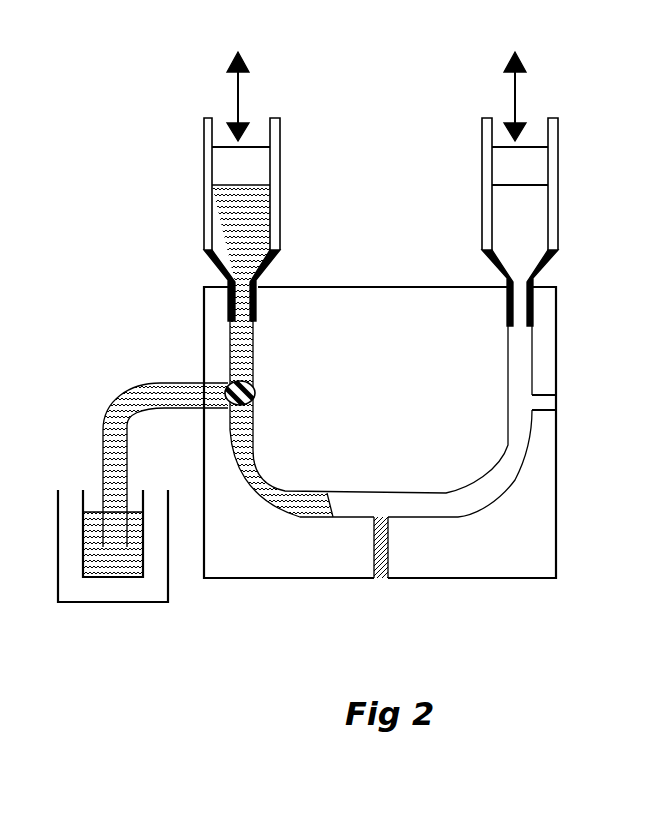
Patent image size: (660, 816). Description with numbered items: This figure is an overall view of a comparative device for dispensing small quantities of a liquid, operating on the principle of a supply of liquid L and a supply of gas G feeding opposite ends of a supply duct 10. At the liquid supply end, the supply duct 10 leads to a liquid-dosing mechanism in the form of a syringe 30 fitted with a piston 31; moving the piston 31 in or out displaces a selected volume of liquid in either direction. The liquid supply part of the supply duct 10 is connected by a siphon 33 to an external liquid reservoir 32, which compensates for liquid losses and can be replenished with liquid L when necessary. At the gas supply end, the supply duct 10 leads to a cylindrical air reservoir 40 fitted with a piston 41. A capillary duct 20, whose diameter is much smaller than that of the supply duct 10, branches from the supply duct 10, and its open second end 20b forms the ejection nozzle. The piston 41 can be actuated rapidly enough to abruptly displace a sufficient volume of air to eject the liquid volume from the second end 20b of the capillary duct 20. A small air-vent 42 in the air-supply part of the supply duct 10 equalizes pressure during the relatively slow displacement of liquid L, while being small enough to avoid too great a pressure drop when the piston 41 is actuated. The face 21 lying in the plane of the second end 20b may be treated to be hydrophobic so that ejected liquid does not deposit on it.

The supply duct 10 is at (503, 503).
The capillary duct 20 is at (388, 545).
The second end of capillary duct 20b is at (375, 580).
The face 21 is at (495, 578).
The syringe 30 is at (282, 197).
The piston 31 is at (253, 173).
The external liquid reservoir 32 is at (123, 603).
The siphon 33 is at (157, 385).
The cylindrical air reservoir 40 is at (483, 230).
The piston 41 is at (528, 173).
The air-vent 42 is at (558, 396).
The liquid L is at (213, 217).
The gas G is at (520, 223).